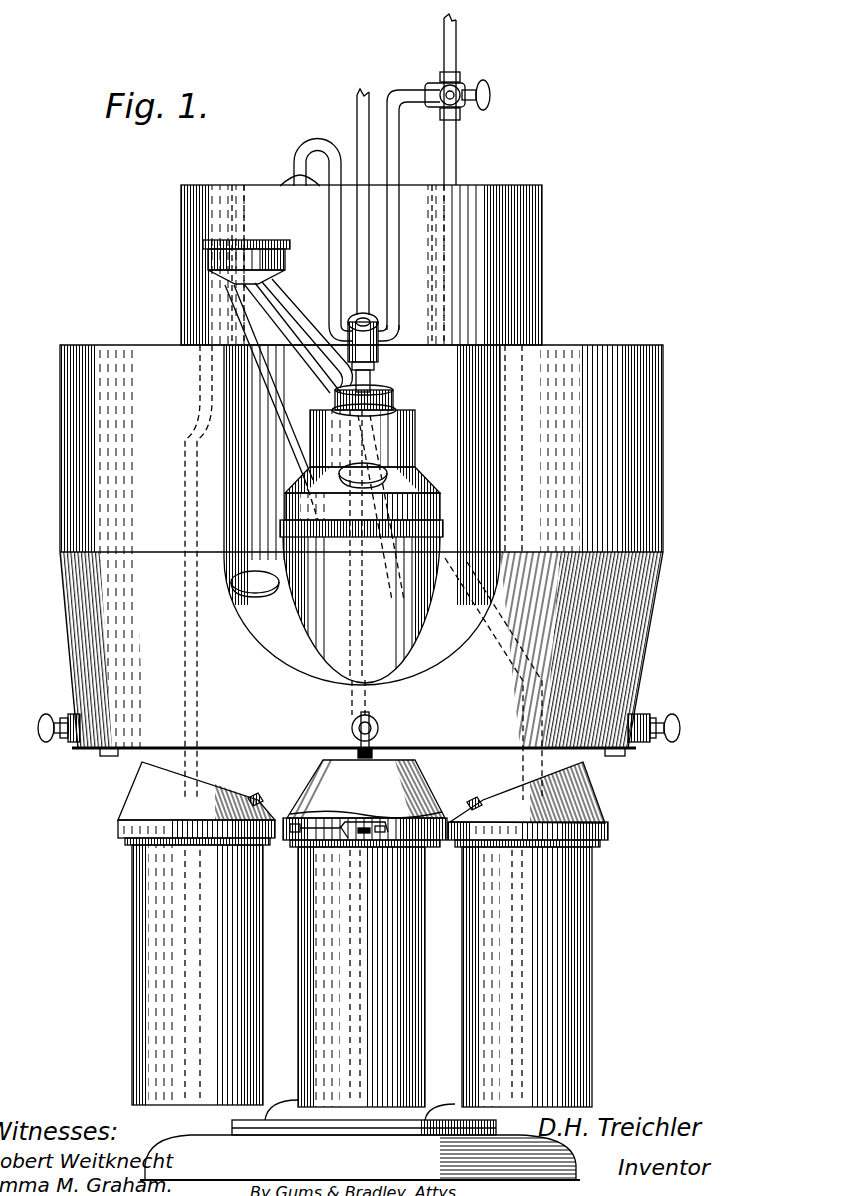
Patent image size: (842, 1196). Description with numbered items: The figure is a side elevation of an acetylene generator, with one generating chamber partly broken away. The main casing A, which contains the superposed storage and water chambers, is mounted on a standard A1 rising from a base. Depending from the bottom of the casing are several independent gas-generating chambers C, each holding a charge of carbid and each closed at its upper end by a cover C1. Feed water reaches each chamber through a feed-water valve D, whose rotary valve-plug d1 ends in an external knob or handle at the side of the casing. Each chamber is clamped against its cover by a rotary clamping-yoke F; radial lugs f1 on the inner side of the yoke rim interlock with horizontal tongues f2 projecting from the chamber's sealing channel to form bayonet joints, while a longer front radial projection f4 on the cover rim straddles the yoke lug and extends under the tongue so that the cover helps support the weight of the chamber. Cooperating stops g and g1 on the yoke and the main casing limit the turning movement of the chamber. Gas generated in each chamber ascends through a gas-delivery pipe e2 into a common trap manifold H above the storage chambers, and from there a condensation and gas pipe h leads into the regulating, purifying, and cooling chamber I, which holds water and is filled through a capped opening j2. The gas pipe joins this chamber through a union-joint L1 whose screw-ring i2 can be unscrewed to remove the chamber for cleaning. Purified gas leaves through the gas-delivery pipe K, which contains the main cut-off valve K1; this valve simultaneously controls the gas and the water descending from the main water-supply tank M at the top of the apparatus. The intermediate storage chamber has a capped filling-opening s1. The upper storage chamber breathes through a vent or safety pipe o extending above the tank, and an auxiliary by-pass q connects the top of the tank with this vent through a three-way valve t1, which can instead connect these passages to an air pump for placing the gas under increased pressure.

The main water-supply tank M is at (374, 265).
The main casing A is at (345, 492).
The gas-delivery pipe K is at (357, 104).
The main cut-off valve K1 is at (380, 324).
The auxiliary vent-pipe or by-pass q is at (329, 223).
The vent or safety pipe o is at (454, 99).
The three-way valve t1 is at (463, 86).
The trap chamber or manifold H is at (246, 262).
The gas-delivery pipe e2 is at (278, 318).
The condensation and gas pipe h is at (295, 366).
The union-joint L1 is at (364, 392).
The screw-ring i2 is at (394, 411).
The capped opening j2 is at (366, 490).
The regulating, purifying, and cooling chamber I is at (441, 531).
The capped filling-opening s1 is at (243, 604).
The feed-water valve D is at (359, 719).
The rotary valve-plug d1 is at (66, 742).
The stop g1 is at (110, 757).
The clamping-yoke F is at (363, 803).
The stop g is at (365, 792).
The cover C1 is at (339, 828).
The tongue f2 is at (345, 840).
The radial lug f1 is at (365, 834).
The front radial projection f4 is at (382, 834).
The gas-generating chamber C is at (351, 976).
The standard A1 is at (360, 1142).